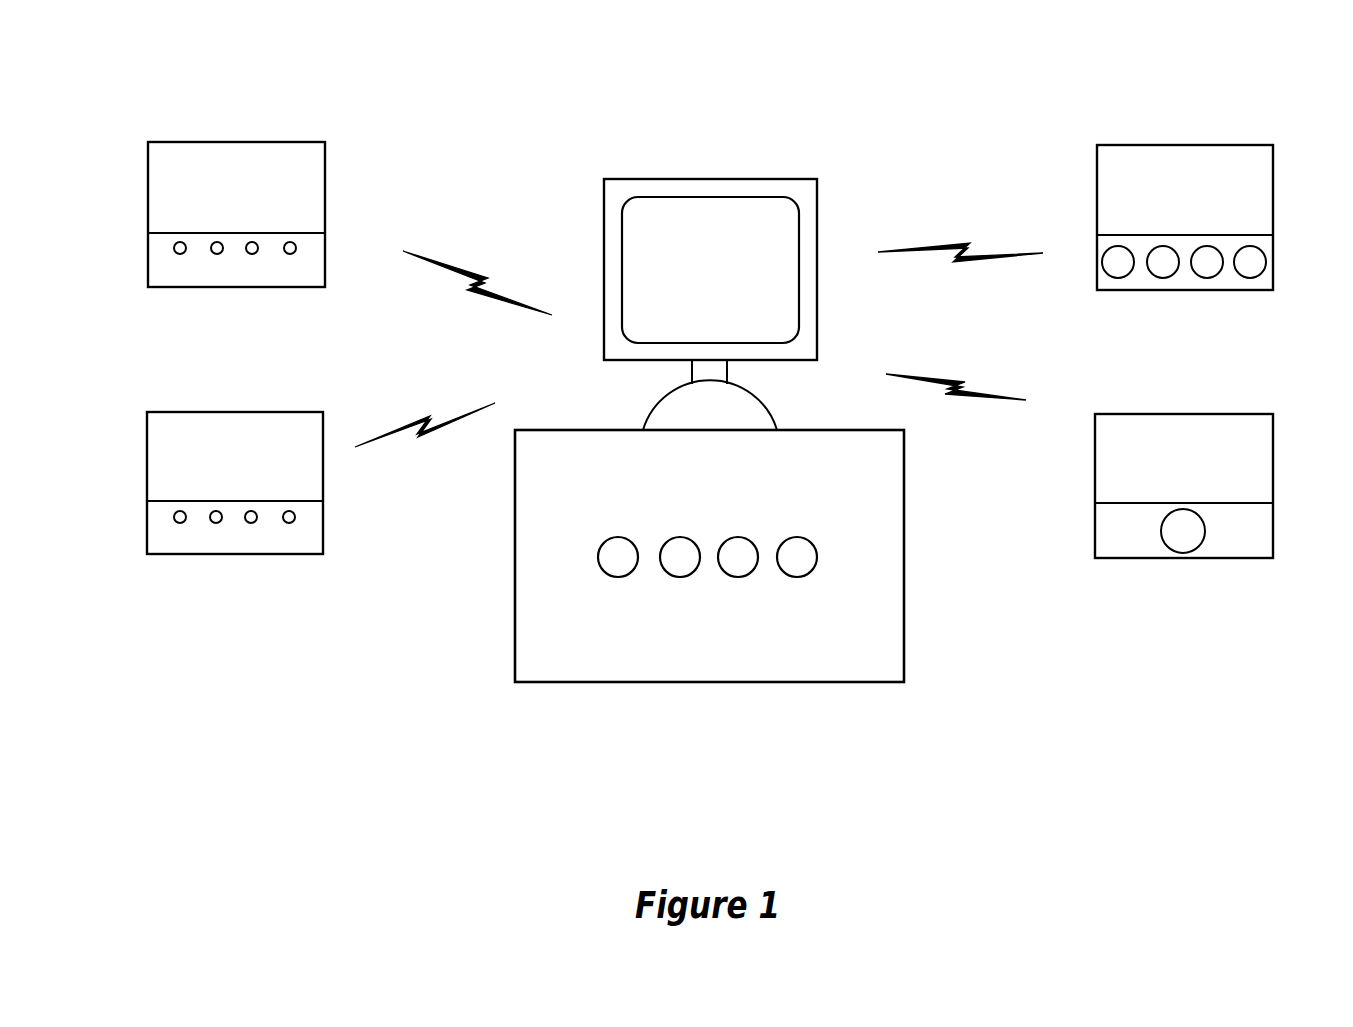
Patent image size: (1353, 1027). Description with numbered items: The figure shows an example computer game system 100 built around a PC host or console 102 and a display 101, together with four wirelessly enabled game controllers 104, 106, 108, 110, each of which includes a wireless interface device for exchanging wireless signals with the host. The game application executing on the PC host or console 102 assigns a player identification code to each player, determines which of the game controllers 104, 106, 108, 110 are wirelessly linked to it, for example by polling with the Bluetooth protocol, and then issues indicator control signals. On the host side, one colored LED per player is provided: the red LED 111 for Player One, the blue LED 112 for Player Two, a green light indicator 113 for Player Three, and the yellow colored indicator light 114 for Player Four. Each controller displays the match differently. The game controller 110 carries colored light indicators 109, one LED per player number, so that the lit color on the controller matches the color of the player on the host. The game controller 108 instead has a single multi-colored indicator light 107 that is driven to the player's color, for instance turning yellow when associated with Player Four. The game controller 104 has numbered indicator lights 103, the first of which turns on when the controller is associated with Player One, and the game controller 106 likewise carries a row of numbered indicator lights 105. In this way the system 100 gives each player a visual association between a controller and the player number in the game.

The computer game system 100 is at (877, 80).
The display 101 is at (726, 282).
The PC host or console 102 is at (568, 460).
The numbered indicator lights 103 is at (325, 267).
The game controller 104 is at (287, 142).
The button panel of game controller 105 is at (323, 537).
The game controller 106 is at (290, 412).
The multi-colored indicator light 107 is at (1273, 540).
The game controller 108 is at (1237, 414).
The colored light indicator 109 is at (1273, 272).
The game controller 110 is at (1237, 145).
The red LED 111 is at (620, 537).
The blue LED 112 is at (682, 537).
The light indicator 113 is at (740, 537).
The yellow colored indicator light 114 is at (799, 537).